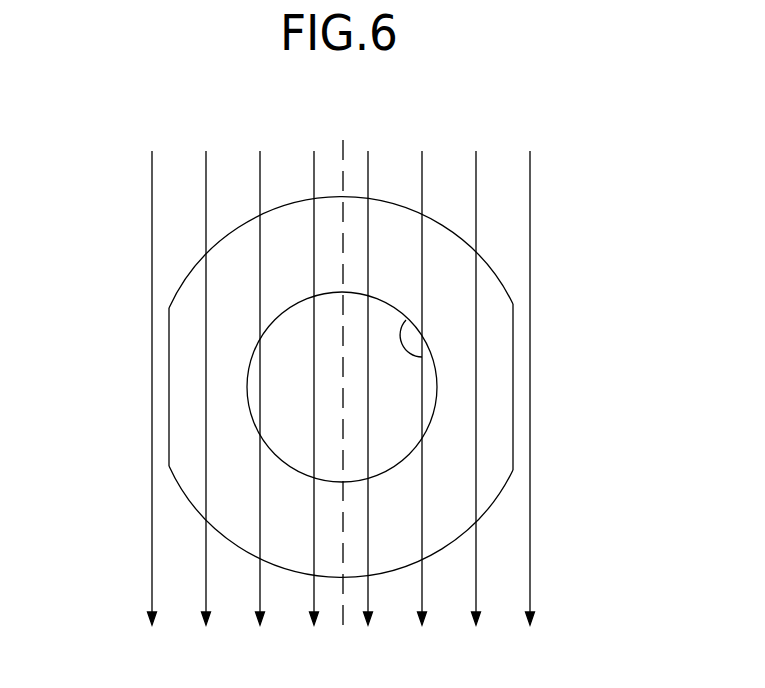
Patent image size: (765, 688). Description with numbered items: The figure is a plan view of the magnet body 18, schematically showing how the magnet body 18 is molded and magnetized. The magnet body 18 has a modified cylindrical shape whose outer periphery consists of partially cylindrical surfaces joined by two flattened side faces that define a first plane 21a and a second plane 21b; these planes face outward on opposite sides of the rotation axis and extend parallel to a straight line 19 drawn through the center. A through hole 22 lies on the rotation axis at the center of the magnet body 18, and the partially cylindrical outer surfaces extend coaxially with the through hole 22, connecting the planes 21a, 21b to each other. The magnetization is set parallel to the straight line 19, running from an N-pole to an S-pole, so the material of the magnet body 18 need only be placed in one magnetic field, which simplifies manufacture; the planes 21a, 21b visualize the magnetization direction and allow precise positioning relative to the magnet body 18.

The magnet body 18 is at (490, 266).
The straight line 19 is at (343, 145).
The first plane 21a is at (513, 393).
The second plane 21b is at (168, 392).
The through hole 22 is at (422, 358).